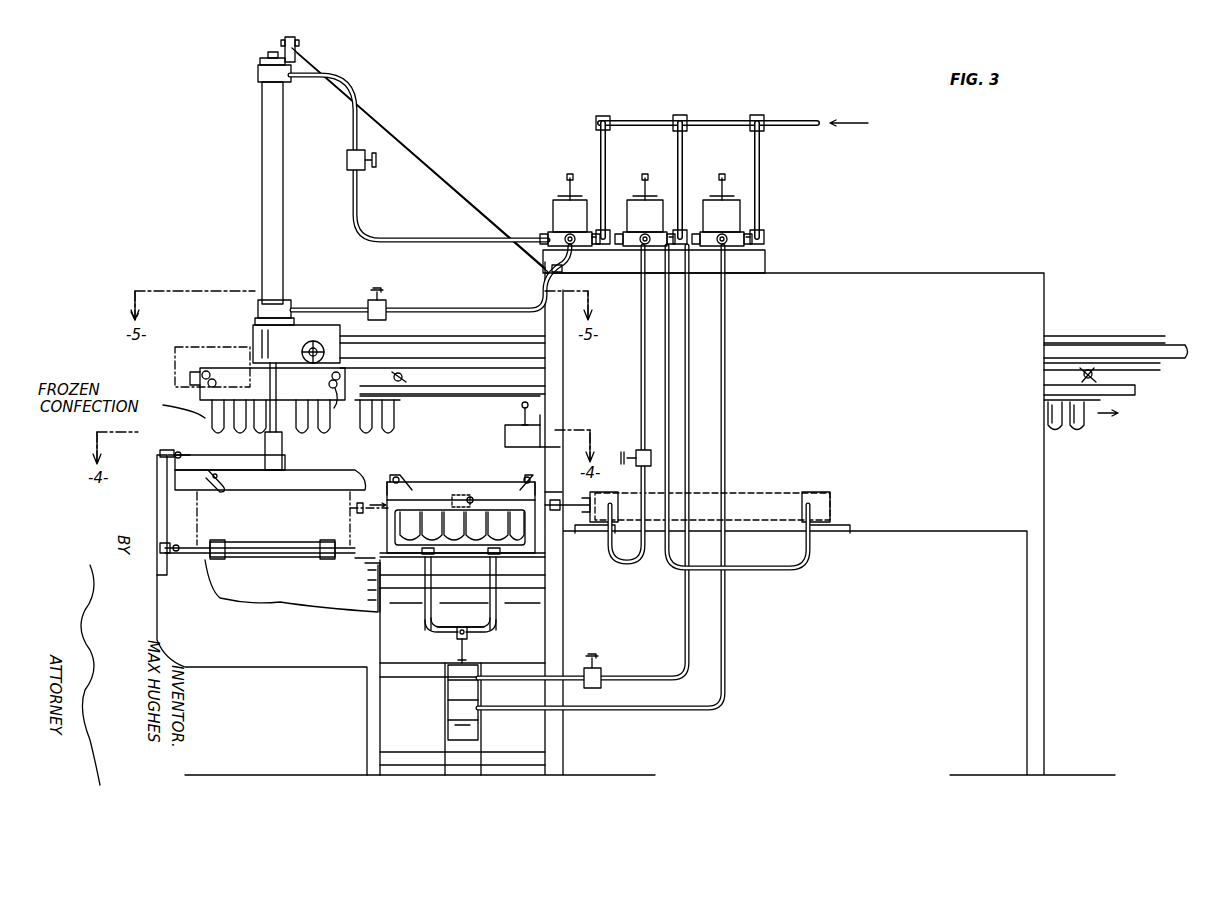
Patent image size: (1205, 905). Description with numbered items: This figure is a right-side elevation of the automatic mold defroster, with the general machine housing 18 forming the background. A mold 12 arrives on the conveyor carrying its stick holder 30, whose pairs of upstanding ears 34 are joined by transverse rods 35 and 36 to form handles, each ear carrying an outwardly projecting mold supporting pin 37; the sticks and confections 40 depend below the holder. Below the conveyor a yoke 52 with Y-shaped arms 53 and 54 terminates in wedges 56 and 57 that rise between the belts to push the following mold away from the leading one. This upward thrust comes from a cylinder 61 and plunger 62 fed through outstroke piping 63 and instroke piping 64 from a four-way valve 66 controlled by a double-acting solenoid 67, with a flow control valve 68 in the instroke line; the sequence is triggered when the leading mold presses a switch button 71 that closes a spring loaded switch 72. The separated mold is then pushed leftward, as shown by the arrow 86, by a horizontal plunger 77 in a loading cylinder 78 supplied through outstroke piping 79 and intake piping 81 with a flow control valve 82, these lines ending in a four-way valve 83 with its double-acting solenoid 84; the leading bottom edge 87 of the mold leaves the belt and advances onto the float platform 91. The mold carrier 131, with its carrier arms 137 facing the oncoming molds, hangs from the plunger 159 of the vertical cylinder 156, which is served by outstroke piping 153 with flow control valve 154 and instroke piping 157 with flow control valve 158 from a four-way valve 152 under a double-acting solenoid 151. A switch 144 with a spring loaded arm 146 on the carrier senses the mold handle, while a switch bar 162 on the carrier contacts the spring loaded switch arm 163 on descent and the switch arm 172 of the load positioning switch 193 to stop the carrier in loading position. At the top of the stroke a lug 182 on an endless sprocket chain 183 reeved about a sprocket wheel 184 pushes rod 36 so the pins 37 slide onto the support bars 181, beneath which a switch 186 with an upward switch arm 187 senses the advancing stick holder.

The mold 12 is at (500, 484).
The housing 18 is at (862, 394).
The stick holder 30 is at (402, 484).
The upstanding ears 34 is at (1094, 376).
The transverse rod 35 is at (205, 374).
The transverse rod 36 is at (331, 378).
The mold supporting pin 37 is at (335, 396).
The sticks and confections 40 is at (1055, 430).
The yoke 52 is at (491, 638).
The Y-shaped arm 53 is at (426, 615).
The Y-shaped arm 54 is at (498, 614).
The wedge 56 is at (427, 562).
The wedge 57 is at (497, 562).
The cylinder 61 is at (448, 700).
The plunger 62 is at (458, 650).
The outstroke piping 63 is at (603, 706).
The instroke piping 64 is at (648, 666).
The four-way valve 66 is at (738, 250).
The double-acting solenoid 67 is at (732, 200).
The flow control valve 68 is at (594, 655).
The switch button 71 is at (473, 497).
The spring loaded switch 72 is at (465, 494).
The plunger 77 is at (574, 505).
The loading cylinder 78 is at (766, 493).
The outstroke piping 79 is at (665, 400).
The intake piping 81 is at (641, 385).
The flow control valve 82 is at (636, 455).
The four-way valve 83 is at (632, 234).
The double-acting solenoid 84 is at (640, 200).
The arrow 86 is at (370, 512).
The leading bottom edge 87 is at (380, 605).
The float platform 91 is at (360, 551).
The mold carrier 131 is at (283, 466).
The carrier arms 137 is at (310, 488).
The switch 144 is at (218, 456).
The spring loaded arm 146 is at (220, 489).
The double-acting solenoid 151 is at (558, 200).
The four-way valve 152 is at (550, 234).
The outstroke piping 153 is at (352, 200).
The flow control valve 154 is at (347, 160).
The cylinder 156 is at (262, 206).
The instroke piping 157 is at (432, 305).
The flow control valve 158 is at (368, 304).
The plunger 159 is at (277, 418).
The switch bar 162 is at (181, 452).
The spring loaded switch arm 163 is at (176, 545).
The switch arm 172 is at (168, 450).
The support bars 181 is at (1140, 392).
The lug 182 is at (457, 340).
The endless sprocket chain 183 is at (440, 342).
The sprocket wheel 184 is at (320, 348).
The switch 186 is at (505, 432).
The switch arm 187 is at (520, 408).
The load positioning switch 193 is at (157, 466).